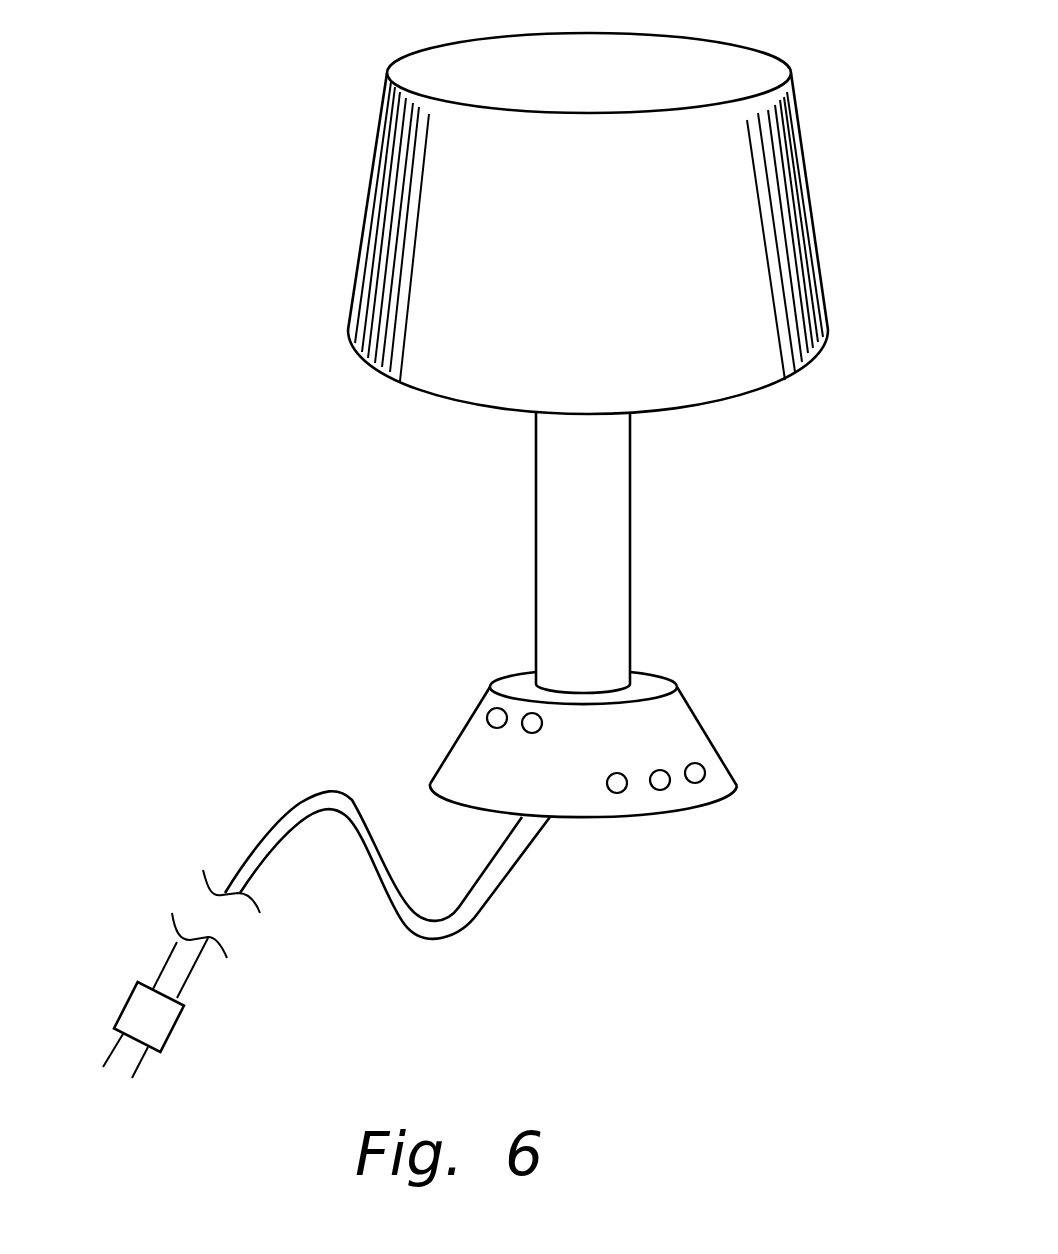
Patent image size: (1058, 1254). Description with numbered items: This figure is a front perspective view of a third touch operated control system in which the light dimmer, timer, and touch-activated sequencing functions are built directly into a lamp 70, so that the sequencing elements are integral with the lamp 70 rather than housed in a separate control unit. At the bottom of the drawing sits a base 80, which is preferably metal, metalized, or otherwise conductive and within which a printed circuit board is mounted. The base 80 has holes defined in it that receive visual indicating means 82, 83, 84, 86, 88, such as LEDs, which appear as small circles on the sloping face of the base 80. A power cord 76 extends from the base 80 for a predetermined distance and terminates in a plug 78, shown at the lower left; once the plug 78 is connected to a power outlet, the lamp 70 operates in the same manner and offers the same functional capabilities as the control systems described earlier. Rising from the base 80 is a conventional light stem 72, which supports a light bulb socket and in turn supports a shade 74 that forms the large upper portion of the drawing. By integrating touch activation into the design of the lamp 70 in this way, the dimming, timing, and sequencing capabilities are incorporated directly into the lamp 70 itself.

The lamp 70 is at (835, 206).
The light stem 72 is at (622, 575).
The shade 74 is at (363, 220).
The power cord 76 is at (257, 835).
The plug 78 is at (125, 1007).
The base 80 is at (685, 720).
The visual indicating means 82 is at (495, 729).
The visual indicating means 83 is at (530, 734).
The visual indicating means 84 is at (612, 793).
The visual indicating means 86 is at (660, 791).
The visual indicating means 88 is at (702, 783).